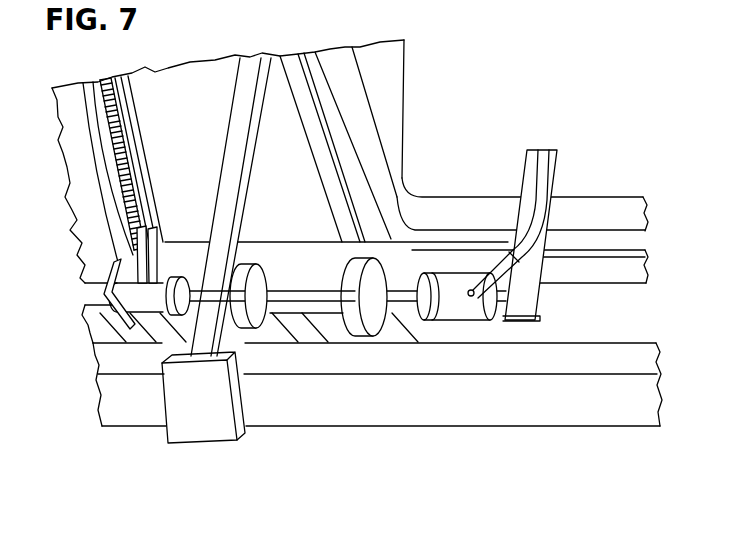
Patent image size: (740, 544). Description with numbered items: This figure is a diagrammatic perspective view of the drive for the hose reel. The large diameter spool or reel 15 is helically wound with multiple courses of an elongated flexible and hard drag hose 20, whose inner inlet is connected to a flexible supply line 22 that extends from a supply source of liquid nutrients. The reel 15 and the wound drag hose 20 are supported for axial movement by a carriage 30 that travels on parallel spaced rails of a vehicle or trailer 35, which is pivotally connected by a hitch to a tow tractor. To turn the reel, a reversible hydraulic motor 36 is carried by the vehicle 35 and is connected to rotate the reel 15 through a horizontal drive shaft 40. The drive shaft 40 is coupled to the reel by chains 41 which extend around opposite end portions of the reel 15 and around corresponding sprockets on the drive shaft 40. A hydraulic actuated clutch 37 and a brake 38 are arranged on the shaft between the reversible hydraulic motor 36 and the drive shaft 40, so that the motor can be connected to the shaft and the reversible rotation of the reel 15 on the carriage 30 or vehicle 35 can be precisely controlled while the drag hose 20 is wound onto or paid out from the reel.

The reel 15 is at (412, 75).
The drag hose 20 is at (88, 187).
The flexible supply line 22 is at (378, 166).
The carriage 30 is at (219, 182).
The vehicle or trailer 35 is at (355, 429).
The reversible hydraulic motor 36 is at (442, 310).
The hydraulic actuated clutch 37 is at (380, 274).
The brake 38 is at (254, 262).
The horizontal drive shaft 40 is at (304, 295).
The chains 41 is at (113, 110).